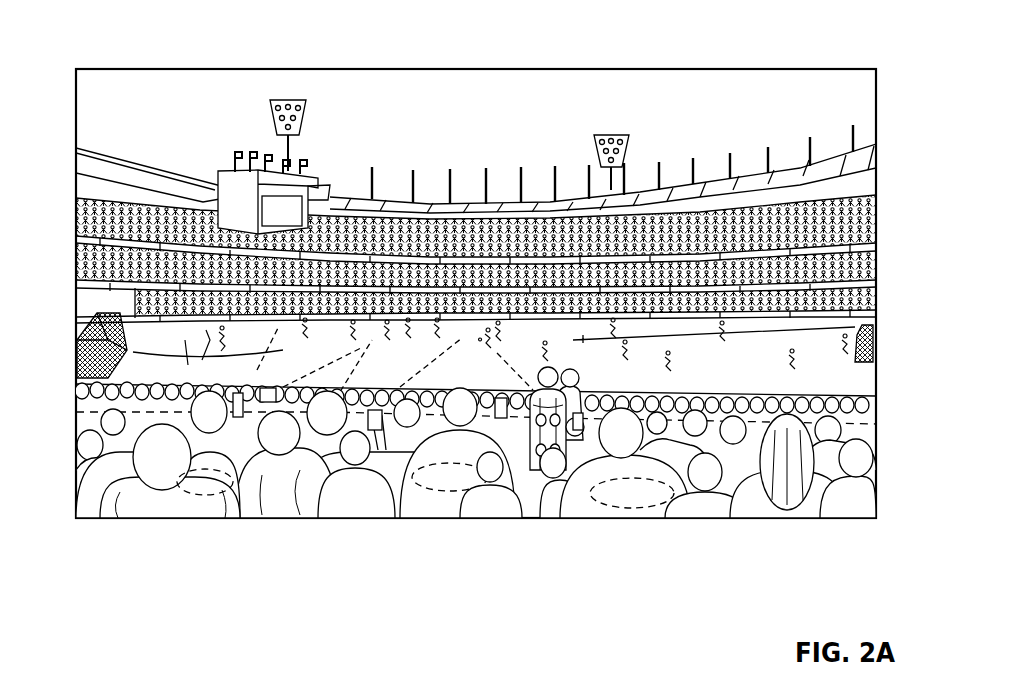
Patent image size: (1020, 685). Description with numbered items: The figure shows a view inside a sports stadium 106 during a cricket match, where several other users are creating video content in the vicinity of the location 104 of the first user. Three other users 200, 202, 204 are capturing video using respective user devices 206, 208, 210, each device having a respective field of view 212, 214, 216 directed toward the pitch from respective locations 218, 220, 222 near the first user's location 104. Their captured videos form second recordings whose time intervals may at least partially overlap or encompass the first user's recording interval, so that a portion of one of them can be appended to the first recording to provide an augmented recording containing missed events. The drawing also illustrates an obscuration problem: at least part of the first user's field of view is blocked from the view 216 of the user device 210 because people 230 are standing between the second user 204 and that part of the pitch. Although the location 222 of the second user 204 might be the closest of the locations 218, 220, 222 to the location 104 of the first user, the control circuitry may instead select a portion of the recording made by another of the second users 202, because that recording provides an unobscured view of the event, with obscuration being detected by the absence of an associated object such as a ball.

The location 104 is at (447, 508).
The sports stadium 106 is at (475, 293).
The second user 200 is at (237, 500).
The second user 202 is at (318, 470).
The second user 204 is at (625, 517).
The user device 206 is at (130, 416).
The user device 208 is at (379, 437).
The user device 210 is at (600, 442).
The field of view 212 is at (78, 330).
The field of view 214 is at (380, 355).
The field of view 216 is at (868, 333).
The location 218 is at (171, 525).
The location 220 is at (325, 452).
The location 222 is at (640, 518).
The people 230 is at (555, 460).